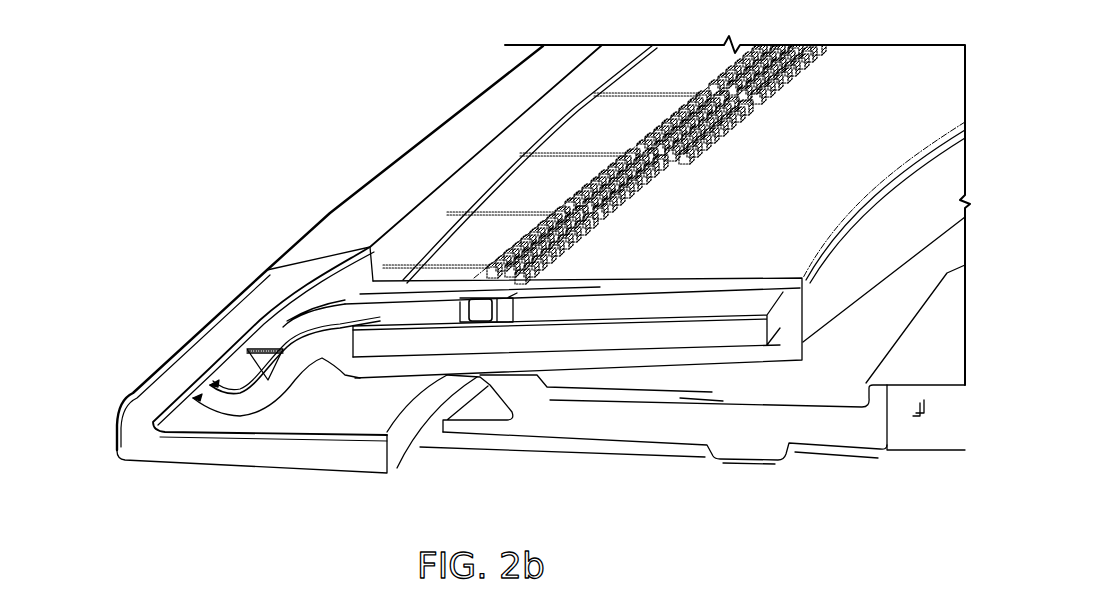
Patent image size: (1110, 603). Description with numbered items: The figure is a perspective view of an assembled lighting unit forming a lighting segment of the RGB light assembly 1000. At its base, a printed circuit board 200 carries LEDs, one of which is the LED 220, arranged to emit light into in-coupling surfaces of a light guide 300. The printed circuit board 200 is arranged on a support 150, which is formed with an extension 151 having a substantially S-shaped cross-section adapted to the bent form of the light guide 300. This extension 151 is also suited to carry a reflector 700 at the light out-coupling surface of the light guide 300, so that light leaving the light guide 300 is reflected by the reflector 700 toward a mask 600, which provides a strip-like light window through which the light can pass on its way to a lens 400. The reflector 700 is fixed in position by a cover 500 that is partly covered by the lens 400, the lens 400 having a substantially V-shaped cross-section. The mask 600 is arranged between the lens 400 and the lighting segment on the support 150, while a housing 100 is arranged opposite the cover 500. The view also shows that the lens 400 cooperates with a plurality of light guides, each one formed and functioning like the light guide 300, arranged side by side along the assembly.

The RGB light assembly 1000 is at (107, 458).
The housing 100 is at (898, 417).
The support 150 is at (673, 357).
The extension 151 is at (266, 400).
The printed circuit board 200 is at (742, 337).
The LED 220 is at (468, 310).
The light guide 300 is at (483, 254).
The lens 400 is at (190, 358).
The cover 500 is at (622, 288).
The mask 600 is at (173, 422).
The reflector 700 is at (233, 380).